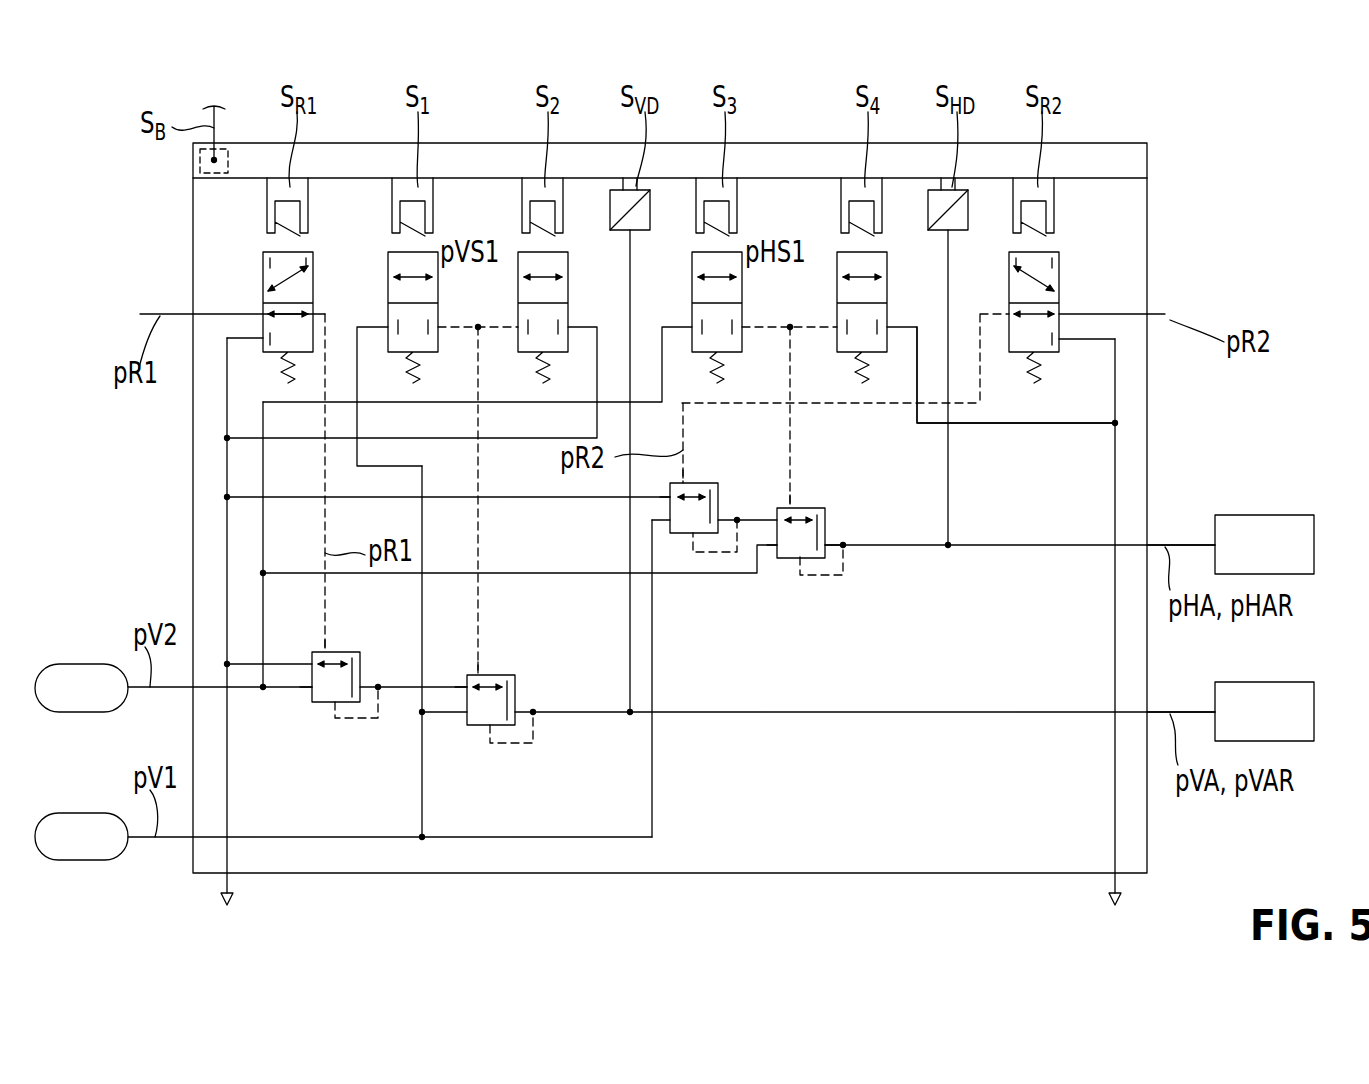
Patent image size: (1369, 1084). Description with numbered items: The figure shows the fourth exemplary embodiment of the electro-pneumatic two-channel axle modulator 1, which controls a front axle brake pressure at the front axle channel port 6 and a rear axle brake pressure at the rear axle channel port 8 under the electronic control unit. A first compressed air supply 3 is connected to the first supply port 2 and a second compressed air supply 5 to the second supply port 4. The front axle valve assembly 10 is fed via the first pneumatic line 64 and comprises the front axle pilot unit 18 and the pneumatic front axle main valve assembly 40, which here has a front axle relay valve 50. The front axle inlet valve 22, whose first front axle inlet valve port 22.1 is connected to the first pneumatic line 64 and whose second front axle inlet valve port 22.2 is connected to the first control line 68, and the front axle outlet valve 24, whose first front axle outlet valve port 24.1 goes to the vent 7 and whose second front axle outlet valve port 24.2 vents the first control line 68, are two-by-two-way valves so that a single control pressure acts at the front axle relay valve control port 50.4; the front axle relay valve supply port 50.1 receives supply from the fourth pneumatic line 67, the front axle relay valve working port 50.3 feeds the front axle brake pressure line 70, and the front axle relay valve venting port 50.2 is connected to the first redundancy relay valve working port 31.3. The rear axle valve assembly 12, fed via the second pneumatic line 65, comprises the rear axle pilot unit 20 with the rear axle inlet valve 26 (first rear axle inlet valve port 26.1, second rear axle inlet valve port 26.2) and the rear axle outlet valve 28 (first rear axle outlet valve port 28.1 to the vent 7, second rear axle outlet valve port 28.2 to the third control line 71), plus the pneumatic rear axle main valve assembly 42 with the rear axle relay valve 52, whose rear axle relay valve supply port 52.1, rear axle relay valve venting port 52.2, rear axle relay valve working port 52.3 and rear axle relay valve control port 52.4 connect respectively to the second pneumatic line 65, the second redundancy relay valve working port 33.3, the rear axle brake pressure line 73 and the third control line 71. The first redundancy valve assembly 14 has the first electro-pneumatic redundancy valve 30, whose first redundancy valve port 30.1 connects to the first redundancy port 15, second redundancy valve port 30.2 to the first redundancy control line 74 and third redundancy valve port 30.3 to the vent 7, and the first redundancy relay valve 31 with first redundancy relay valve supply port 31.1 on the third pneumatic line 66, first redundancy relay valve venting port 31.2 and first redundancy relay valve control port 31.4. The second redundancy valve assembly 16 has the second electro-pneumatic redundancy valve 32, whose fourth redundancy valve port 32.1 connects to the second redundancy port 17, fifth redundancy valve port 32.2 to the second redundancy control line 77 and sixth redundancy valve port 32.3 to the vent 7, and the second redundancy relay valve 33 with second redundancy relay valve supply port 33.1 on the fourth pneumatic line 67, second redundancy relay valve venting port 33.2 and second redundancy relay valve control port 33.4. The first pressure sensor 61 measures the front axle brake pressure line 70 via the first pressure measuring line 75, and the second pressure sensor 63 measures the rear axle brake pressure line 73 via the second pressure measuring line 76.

The electro-pneumatic two-channel axle modulator 1 is at (602, 485).
The first supply port 2 is at (390, 872).
The first compressed air supply 3 is at (81, 877).
The second supply port 4 is at (220, 722).
The second compressed air supply 5 is at (81, 652).
The front axle channel port 6 is at (1230, 696).
The vent 7 is at (696, 636).
The rear axle channel port 8 is at (1230, 529).
The front axle valve assembly 10 is at (476, 231).
The rear axle valve assembly 12 is at (789, 296).
The first redundancy valve assembly 14 is at (347, 758).
The first redundancy port 15 is at (231, 288).
The second redundancy valve assembly 16 is at (666, 513).
The second redundancy port 17 is at (1126, 278).
The front axle pilot unit 18 is at (480, 365).
The rear axle pilot unit 20 is at (792, 231).
The front axle inlet valve 22 is at (398, 292).
The first front axle inlet valve port 22.1 is at (363, 304).
The second front axle inlet valve port 22.2 is at (443, 363).
The front axle outlet valve 24 is at (541, 280).
The first front axle outlet valve port 24.1 is at (493, 304).
The second front axle outlet valve port 24.2 is at (591, 290).
The rear axle inlet valve 26 is at (710, 292).
The first rear axle inlet valve port 26.1 is at (671, 297).
The second rear axle inlet valve port 26.2 is at (755, 363).
The rear axle outlet valve 28 is at (858, 280).
The first rear axle outlet valve port 28.1 is at (810, 304).
The second rear axle outlet valve port 28.2 is at (910, 290).
The first electro-pneumatic redundancy valve 30 is at (291, 290).
The first redundancy valve port 30.1 is at (241, 290).
The second redundancy valve port 30.2 is at (338, 279).
The third redundancy valve port 30.3 is at (254, 368).
The first redundancy relay valve 31 is at (347, 696).
The first redundancy relay valve supply port 31.1 is at (318, 737).
The first redundancy relay valve venting port 31.2 is at (273, 623).
The first redundancy relay valve working port 31.3 is at (401, 747).
The first redundancy relay valve control port 31.4 is at (363, 626).
The second electro-pneumatic redundancy valve 32 is at (1036, 291).
The fourth redundancy valve port 32.1 is at (986, 292).
The fifth redundancy valve port 32.2 is at (1084, 282).
The sixth redundancy valve port 32.3 is at (1082, 369).
The second redundancy relay valve 33 is at (663, 521).
The second redundancy relay valve supply port 33.1 is at (608, 541).
The second redundancy relay valve venting port 33.2 is at (608, 515).
The second redundancy relay valve working port 33.3 is at (716, 568).
The second redundancy relay valve control port 33.4 is at (711, 454).
The pneumatic front axle main valve assembly 40 is at (514, 763).
The pneumatic rear axle main valve assembly 42 is at (828, 554).
The front axle relay valve 50 is at (514, 718).
The front axle relay valve supply port 50.1 is at (450, 763).
The front axle relay valve venting port 50.2 is at (450, 646).
The front axle relay valve working port 50.3 is at (522, 771).
The front axle relay valve control port 50.4 is at (517, 650).
The rear axle relay valve 52 is at (803, 560).
The rear axle relay valve supply port 52.1 is at (811, 585).
The rear axle relay valve venting port 52.2 is at (754, 581).
The rear axle relay valve working port 52.3 is at (837, 602).
The rear axle relay valve control port 52.4 is at (828, 484).
The first pressure sensor 61 is at (653, 208).
The second pressure sensor 63 is at (928, 206).
The first pneumatic line 64 is at (445, 653).
The second pneumatic line 65 is at (520, 551).
The third pneumatic line 66 is at (255, 584).
The fourth pneumatic line 67 is at (621, 678).
The first control line 68 is at (417, 402).
The front axle brake pressure line 70 is at (865, 680).
The third control line 71 is at (845, 398).
The rear axle brake pressure line 73 is at (1020, 516).
The first redundancy control line 74 is at (359, 483).
The first pressure measuring line 75 is at (448, 484).
The second pressure measuring line 76 is at (992, 389).
The second redundancy control line 77 is at (992, 396).